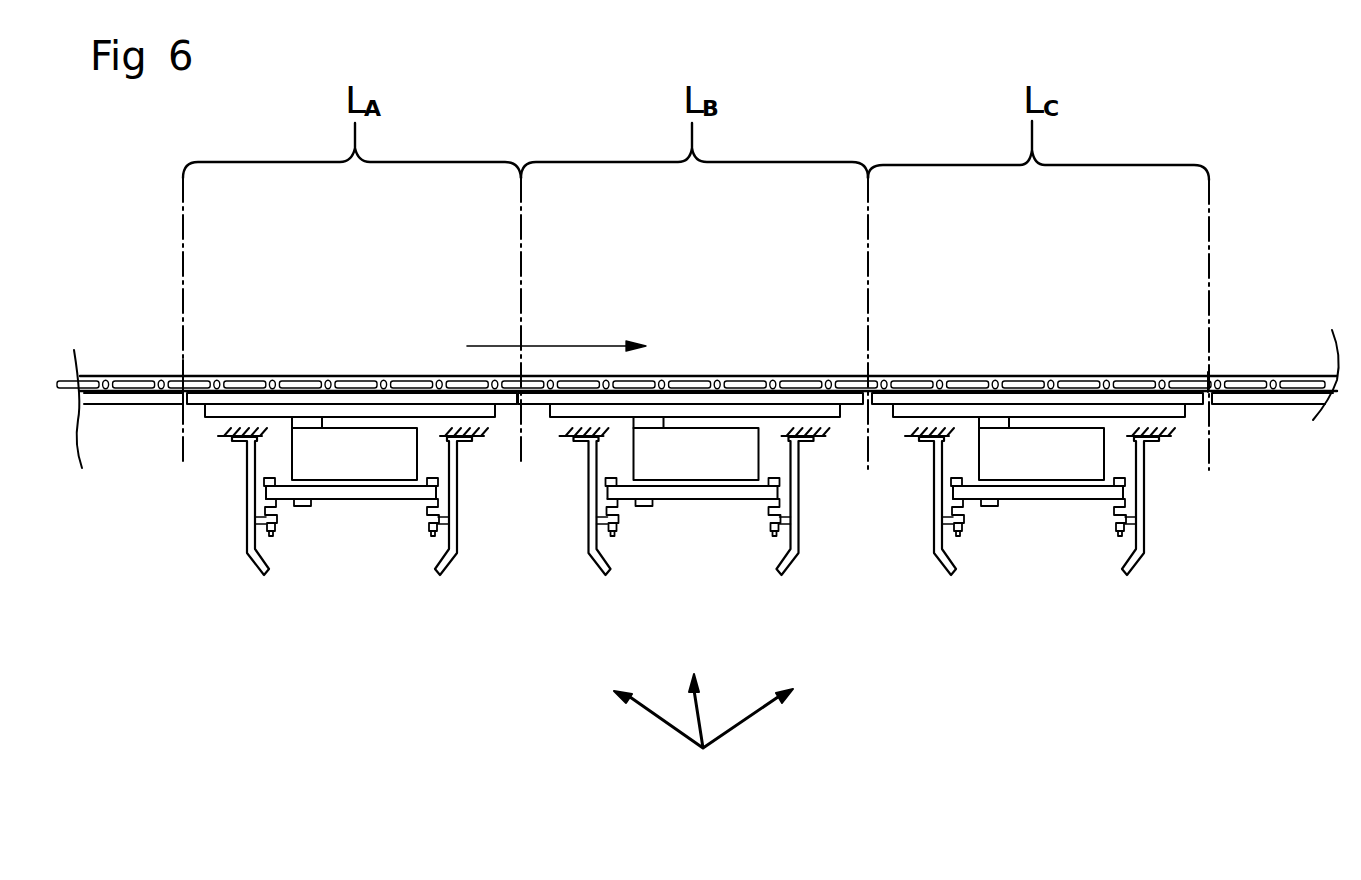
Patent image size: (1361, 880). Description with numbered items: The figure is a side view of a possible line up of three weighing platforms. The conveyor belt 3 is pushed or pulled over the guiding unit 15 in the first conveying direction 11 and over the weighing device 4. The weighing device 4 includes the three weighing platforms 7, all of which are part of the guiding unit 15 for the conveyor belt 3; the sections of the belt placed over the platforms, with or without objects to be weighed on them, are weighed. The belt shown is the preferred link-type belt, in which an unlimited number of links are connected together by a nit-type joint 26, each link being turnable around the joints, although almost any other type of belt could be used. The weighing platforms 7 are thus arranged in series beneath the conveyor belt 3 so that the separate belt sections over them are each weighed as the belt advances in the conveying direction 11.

The conveyor belt 3 is at (368, 385).
The weighing device 4 is at (703, 748).
The weighing platforms 7 is at (232, 400).
The first conveying direction 11 is at (521, 345).
The guiding unit 15 is at (125, 401).
The nit-type joint 26 is at (950, 377).